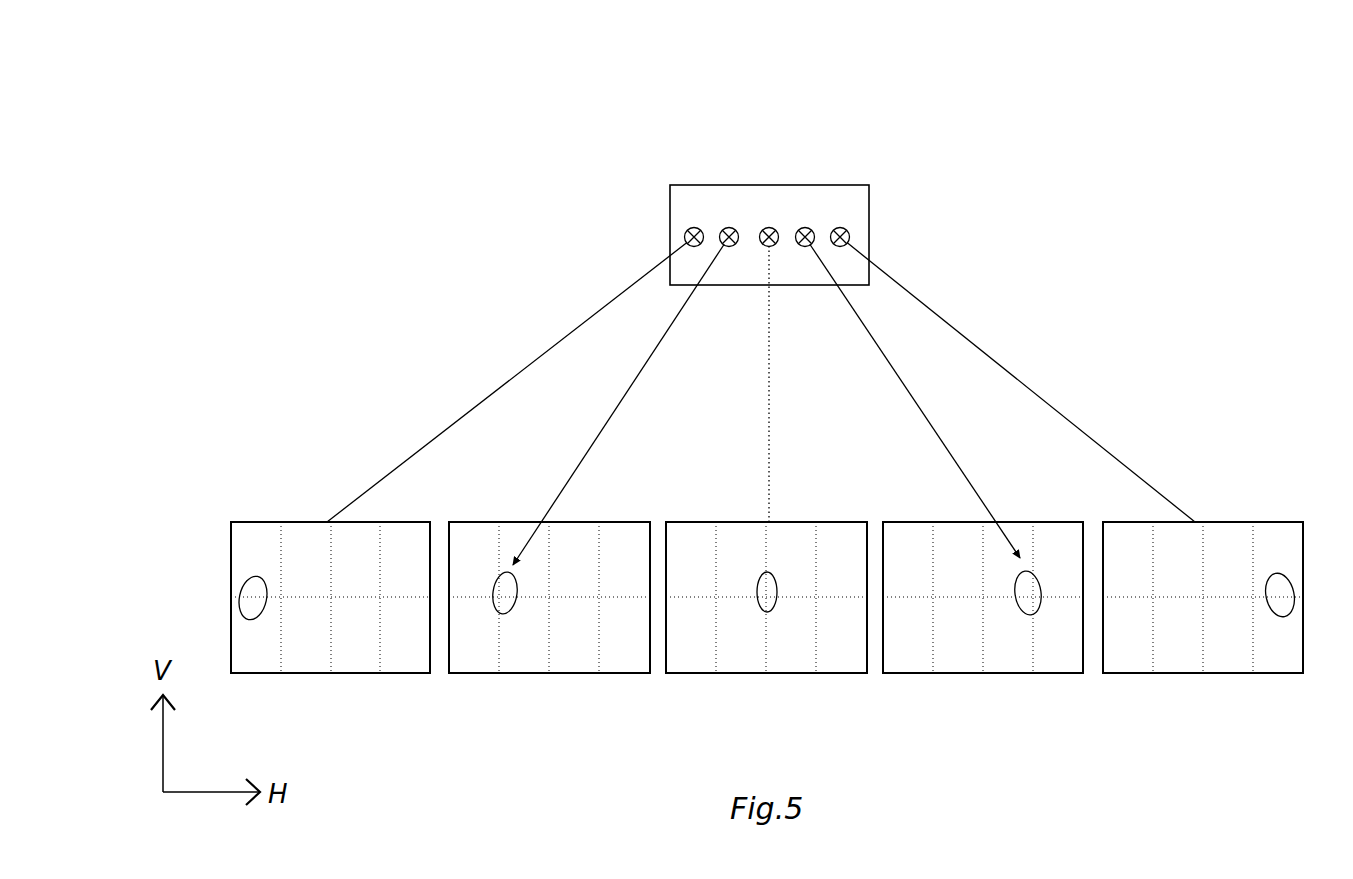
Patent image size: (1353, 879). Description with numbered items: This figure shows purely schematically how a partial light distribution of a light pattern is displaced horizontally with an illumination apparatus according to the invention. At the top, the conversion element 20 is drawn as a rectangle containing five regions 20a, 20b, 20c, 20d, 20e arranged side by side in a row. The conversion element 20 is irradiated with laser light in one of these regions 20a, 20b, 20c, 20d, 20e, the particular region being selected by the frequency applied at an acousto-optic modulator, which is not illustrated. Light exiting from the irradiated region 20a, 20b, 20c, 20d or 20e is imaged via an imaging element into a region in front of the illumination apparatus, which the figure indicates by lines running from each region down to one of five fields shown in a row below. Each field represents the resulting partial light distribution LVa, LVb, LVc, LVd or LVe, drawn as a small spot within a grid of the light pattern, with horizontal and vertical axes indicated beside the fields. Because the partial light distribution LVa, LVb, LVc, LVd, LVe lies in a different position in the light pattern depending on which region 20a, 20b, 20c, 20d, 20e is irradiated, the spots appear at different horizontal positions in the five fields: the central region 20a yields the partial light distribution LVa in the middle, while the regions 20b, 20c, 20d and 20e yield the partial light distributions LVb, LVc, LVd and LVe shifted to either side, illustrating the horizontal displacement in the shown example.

The conversion element 20 is at (878, 247).
The region 20a is at (769, 221).
The region 20b is at (737, 221).
The region 20c is at (800, 221).
The region 20d is at (690, 222).
The region 20e is at (842, 221).
The partial light distribution LVa is at (762, 616).
The partial light distribution LVb is at (492, 616).
The partial light distribution LVc is at (1025, 616).
The partial light distribution LVd is at (246, 618).
The partial light distribution LVe is at (1273, 616).